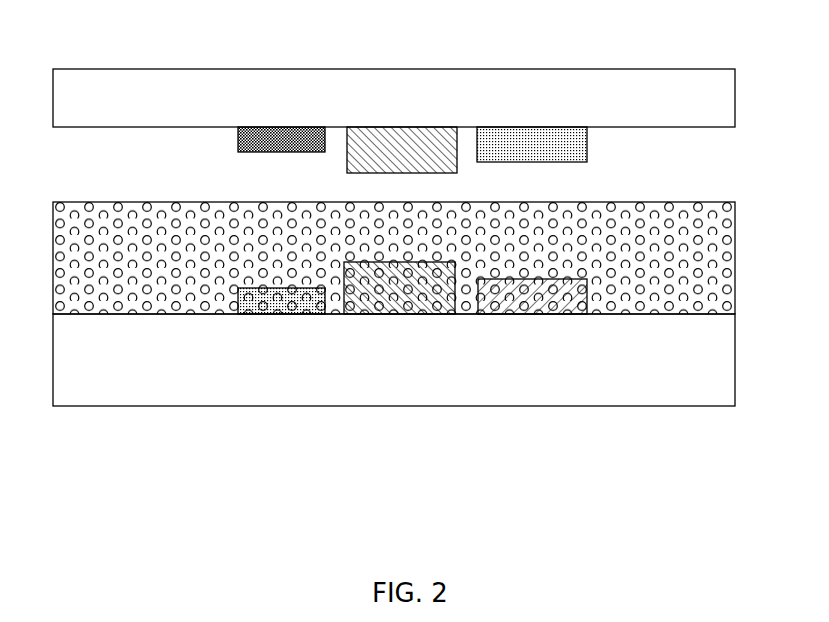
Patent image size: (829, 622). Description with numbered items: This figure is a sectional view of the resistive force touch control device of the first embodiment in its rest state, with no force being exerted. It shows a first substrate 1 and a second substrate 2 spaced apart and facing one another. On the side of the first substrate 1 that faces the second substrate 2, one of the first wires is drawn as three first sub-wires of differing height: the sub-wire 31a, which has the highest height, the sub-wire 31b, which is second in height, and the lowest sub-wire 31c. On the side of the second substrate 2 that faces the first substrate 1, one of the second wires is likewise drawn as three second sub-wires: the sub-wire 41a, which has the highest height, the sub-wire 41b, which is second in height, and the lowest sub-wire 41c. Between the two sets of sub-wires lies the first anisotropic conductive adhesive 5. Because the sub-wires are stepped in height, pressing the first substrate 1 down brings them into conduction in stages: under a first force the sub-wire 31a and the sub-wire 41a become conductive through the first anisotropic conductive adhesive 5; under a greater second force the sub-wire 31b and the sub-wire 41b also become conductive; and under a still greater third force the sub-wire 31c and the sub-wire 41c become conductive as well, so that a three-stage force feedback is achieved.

The first substrate 1 is at (657, 108).
The second substrate 2 is at (660, 358).
The first anisotropic conductive adhesive 5 is at (587, 242).
The sub-wire 31a is at (417, 145).
The sub-wire 31b is at (550, 143).
The sub-wire 31c is at (290, 127).
The sub-wire 41a is at (398, 300).
The sub-wire 41b is at (530, 300).
The sub-wire 41c is at (273, 300).